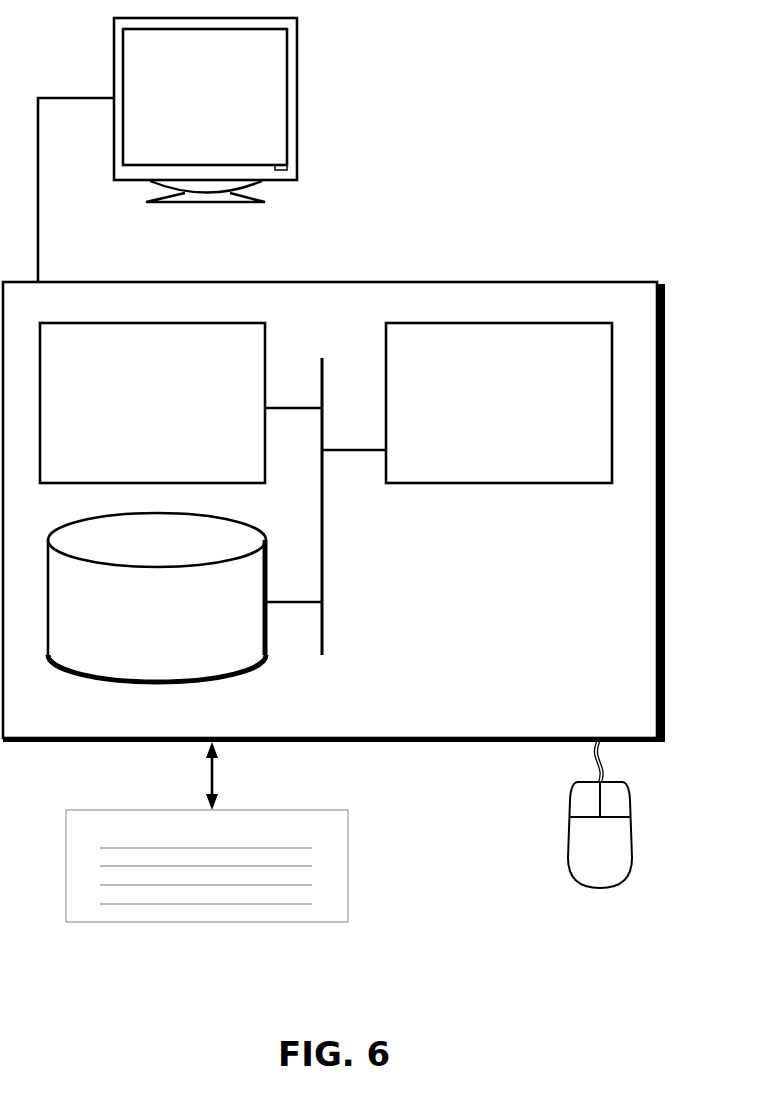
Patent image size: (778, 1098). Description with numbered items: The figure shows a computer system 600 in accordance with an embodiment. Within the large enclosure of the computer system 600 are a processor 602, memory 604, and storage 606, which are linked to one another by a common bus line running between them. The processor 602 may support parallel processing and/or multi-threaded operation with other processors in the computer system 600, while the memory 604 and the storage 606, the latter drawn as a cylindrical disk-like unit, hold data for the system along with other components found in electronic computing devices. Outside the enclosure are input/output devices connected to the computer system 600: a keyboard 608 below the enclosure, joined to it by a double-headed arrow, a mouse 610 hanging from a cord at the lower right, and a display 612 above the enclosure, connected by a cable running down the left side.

The computer system 600 is at (376, 249).
The processor 602 is at (499, 403).
The memory 604 is at (152, 403).
The storage 606 is at (157, 597).
The keyboard 608 is at (207, 848).
The mouse 610 is at (600, 815).
The display 612 is at (167, 150).